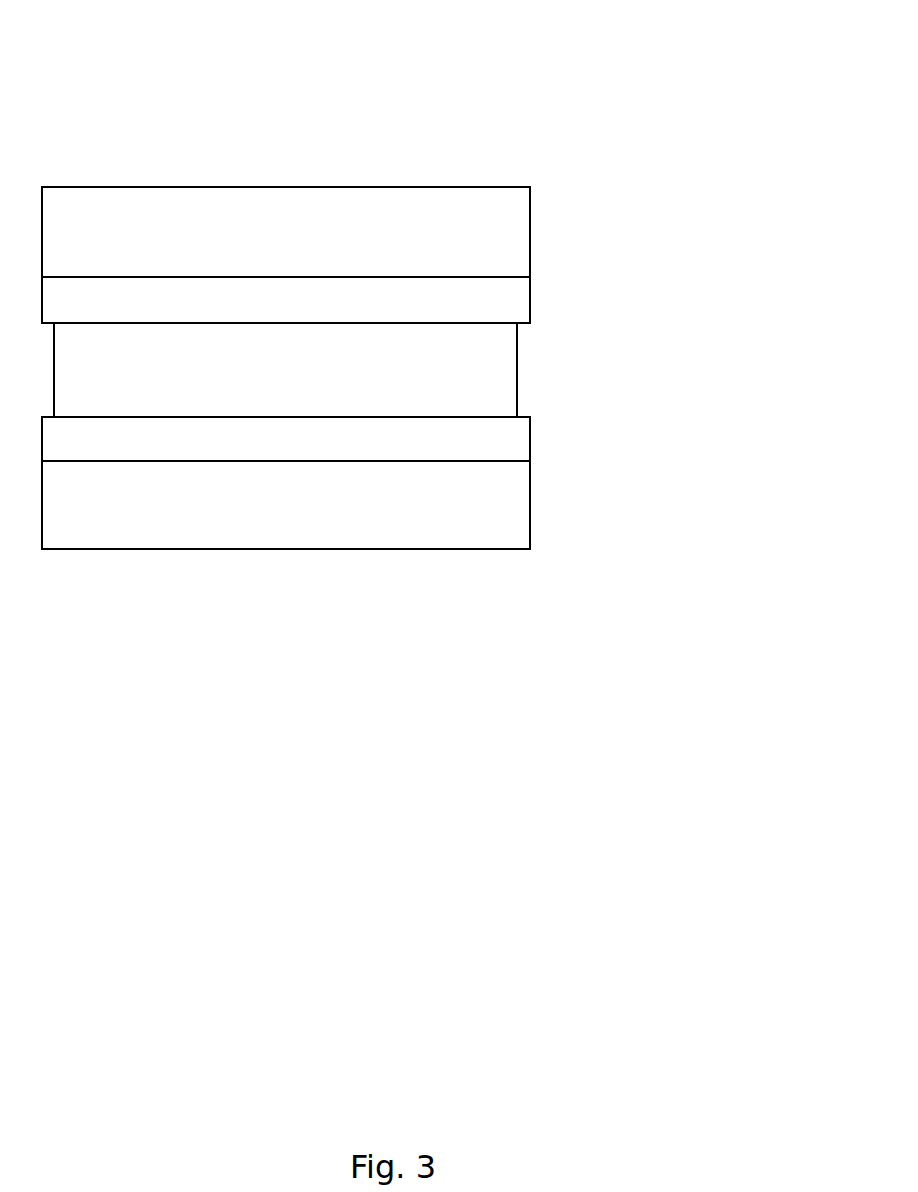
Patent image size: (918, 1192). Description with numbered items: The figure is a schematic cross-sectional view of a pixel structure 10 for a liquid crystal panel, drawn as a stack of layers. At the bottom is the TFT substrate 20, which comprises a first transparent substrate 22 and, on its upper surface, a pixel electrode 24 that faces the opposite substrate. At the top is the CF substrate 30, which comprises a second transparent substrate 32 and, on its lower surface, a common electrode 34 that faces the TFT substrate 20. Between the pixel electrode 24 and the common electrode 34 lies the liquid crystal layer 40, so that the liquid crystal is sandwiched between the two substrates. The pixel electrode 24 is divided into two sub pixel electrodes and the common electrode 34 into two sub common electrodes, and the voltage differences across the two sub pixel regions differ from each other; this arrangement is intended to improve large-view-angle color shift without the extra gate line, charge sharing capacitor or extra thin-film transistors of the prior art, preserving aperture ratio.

The pixel structure 10 is at (331, 278).
The TFT substrate 20 is at (366, 483).
The first transparent substrate 22 is at (502, 512).
The pixel electrode 24 is at (502, 440).
The CF substrate 30 is at (366, 255).
The second transparent substrate 32 is at (502, 233).
The common electrode 34 is at (502, 303).
The liquid crystal layer 40 is at (502, 375).